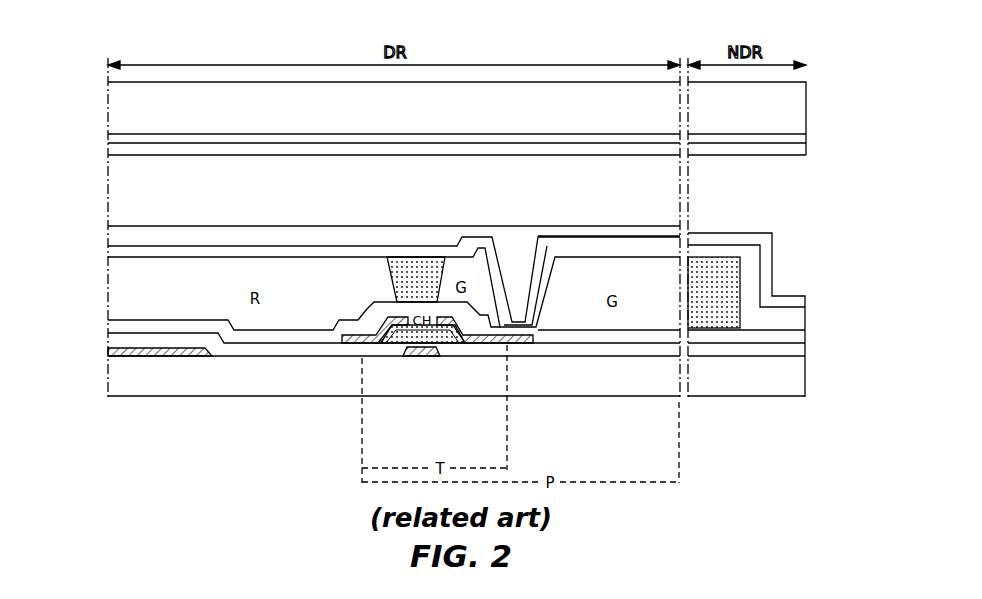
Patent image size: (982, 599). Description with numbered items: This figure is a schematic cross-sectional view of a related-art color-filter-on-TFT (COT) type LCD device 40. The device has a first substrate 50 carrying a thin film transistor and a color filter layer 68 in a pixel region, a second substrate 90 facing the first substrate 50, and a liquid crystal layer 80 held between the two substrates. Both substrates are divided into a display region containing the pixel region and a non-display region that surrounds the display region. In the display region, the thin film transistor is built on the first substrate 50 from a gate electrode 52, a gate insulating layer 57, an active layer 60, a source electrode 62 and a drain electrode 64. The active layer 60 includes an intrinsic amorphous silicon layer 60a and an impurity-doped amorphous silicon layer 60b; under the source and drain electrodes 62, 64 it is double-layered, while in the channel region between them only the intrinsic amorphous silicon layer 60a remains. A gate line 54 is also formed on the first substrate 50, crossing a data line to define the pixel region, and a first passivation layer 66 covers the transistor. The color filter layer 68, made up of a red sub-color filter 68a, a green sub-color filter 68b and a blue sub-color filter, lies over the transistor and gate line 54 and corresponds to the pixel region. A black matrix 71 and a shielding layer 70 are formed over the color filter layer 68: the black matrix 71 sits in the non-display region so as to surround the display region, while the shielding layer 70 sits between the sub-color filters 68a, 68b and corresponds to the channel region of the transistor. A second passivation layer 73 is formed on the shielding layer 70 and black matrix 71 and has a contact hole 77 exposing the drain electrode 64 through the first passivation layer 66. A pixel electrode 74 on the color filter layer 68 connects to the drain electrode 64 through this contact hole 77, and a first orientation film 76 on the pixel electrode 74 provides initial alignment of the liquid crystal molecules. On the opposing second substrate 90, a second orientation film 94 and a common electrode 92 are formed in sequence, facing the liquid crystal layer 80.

The COT type LCD device 40 is at (98, 111).
The first substrate 50 is at (189, 387).
The gate electrode 52 is at (422, 357).
The gate line 54 is at (157, 358).
The gate insulating layer 57 is at (255, 353).
The active layer 60 is at (443, 423).
The intrinsic amorphous silicon layer 60a is at (453, 341).
The impurity-doped amorphous silicon layer 60b is at (463, 341).
The source electrode 62 is at (349, 343).
The drain electrode 64 is at (527, 343).
The first passivation layer 66 is at (308, 337).
The color filter layer 68 is at (307, 193).
The red sub-color filter 68a is at (303, 275).
The green sub-color filter 68b is at (463, 273).
The shielding layer 70 is at (409, 262).
The black matrix 71 is at (712, 275).
The second passivation layer 73 is at (338, 250).
The pixel electrode 74 is at (630, 234).
The first orientation film 76 is at (253, 232).
The contact hole 77 is at (516, 262).
The liquid crystal layer 80 is at (670, 212).
The second substrate 90 is at (354, 118).
The common electrode 92 is at (133, 138).
The second orientation film 94 is at (193, 153).